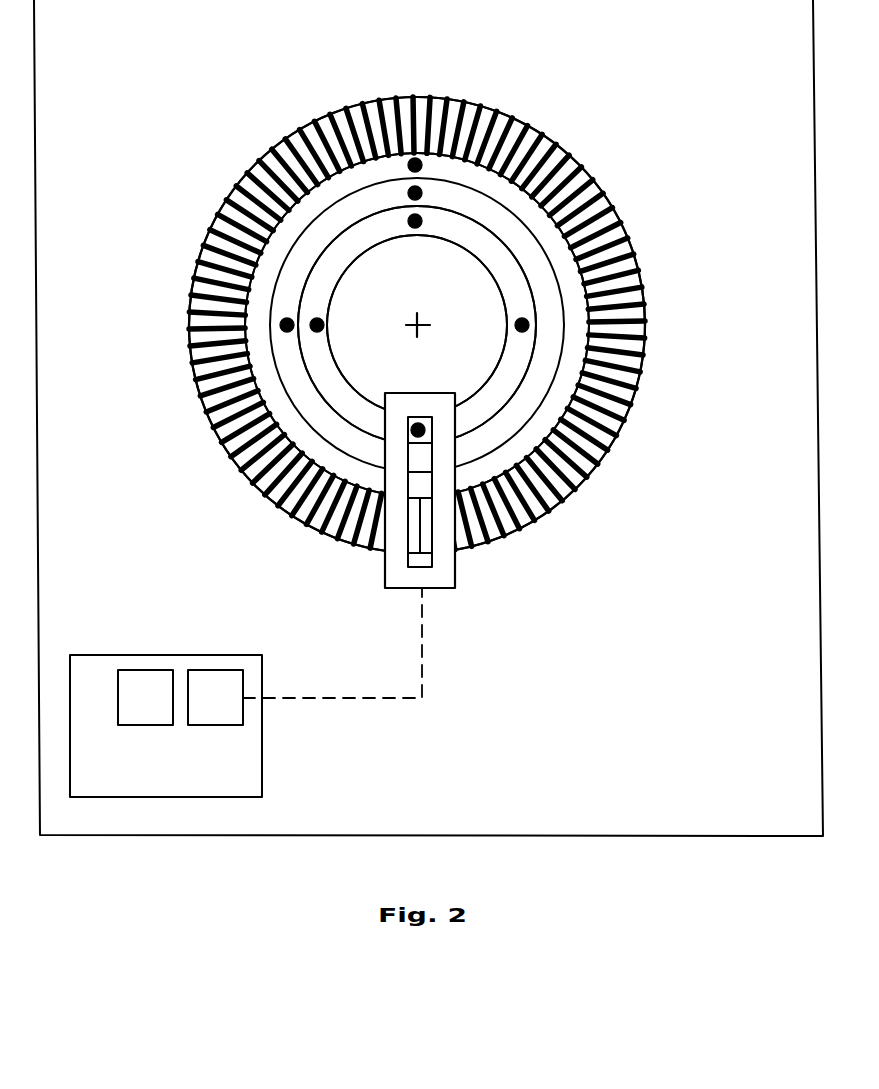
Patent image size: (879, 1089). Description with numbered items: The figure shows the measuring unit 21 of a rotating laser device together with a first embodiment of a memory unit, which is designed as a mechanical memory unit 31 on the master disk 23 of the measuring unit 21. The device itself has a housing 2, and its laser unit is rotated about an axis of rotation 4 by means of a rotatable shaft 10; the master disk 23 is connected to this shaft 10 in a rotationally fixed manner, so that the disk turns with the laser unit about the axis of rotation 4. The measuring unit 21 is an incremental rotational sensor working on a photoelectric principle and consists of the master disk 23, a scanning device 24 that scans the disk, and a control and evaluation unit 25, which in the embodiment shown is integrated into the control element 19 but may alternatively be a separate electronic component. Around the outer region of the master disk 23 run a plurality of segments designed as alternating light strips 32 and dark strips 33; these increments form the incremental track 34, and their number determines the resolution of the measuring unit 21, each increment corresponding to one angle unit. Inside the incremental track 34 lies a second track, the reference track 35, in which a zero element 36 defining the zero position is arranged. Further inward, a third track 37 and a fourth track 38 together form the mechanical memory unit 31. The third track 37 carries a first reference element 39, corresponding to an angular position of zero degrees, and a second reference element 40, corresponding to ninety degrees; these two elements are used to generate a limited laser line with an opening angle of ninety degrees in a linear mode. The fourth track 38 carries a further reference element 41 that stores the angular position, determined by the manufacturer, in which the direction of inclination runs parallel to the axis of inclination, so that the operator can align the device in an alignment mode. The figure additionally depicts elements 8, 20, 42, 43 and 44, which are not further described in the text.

The housing 2 is at (760, 836).
The axis of rotation 4 is at (426, 318).
The control unit 8 is at (139, 712).
The rotatable shaft 10 is at (338, 380).
The control element 19 is at (88, 673).
The signal line 20 is at (323, 698).
The measuring unit 21 is at (228, 114).
The master disk 23 is at (210, 232).
The scanning device 24 is at (446, 560).
The control and evaluation unit 25 is at (203, 712).
The mechanical memory unit 31 is at (349, 425).
The light strips 32 is at (597, 433).
The dark strips 33 is at (563, 500).
The incremental track 34 is at (636, 333).
The reference track 35 is at (512, 188).
The zero element 36 is at (415, 160).
The third track 37 is at (523, 238).
The fourth track 38 is at (518, 289).
The first reference element 39 is at (414, 187).
The second reference element 40 is at (283, 325).
The reference element 41 is at (415, 228).
The left inner marker 42 is at (324, 325).
The sensor marker 43 is at (418, 424).
The right marker 44 is at (515, 325).